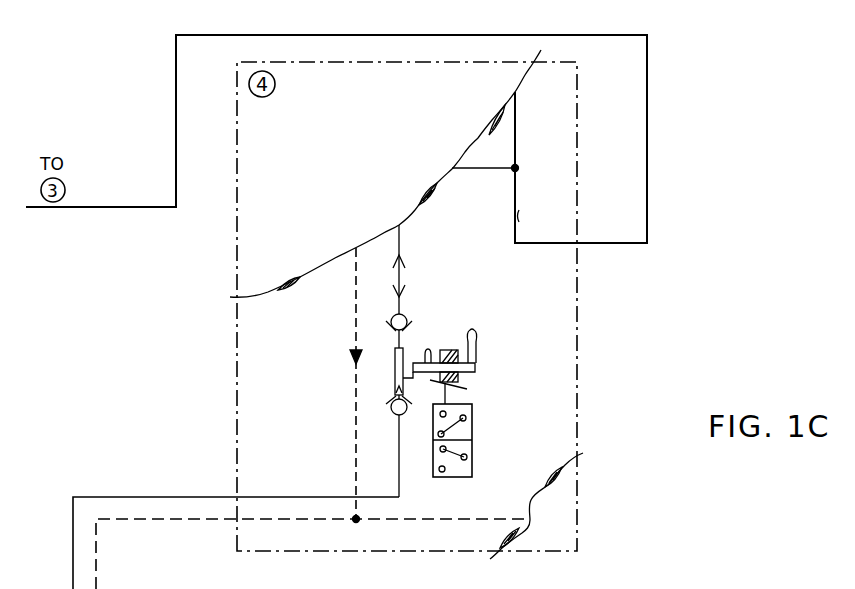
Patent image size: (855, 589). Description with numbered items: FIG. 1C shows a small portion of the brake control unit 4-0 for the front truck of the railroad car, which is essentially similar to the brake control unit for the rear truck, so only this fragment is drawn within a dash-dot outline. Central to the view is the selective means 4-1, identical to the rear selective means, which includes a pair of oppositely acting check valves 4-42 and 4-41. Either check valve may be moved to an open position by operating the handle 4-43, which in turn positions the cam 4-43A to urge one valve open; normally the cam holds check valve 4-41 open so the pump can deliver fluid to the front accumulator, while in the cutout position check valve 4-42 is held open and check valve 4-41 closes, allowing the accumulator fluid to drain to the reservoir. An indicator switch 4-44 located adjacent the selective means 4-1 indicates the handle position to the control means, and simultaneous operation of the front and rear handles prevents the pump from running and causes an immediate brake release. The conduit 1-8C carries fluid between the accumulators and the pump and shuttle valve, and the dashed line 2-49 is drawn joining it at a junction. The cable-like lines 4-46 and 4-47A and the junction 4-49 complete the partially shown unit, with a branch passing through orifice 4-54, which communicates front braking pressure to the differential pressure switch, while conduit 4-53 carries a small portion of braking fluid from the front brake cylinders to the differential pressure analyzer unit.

The brake control unit 4-0 is at (235, 124).
The flexible cable 4-46 is at (478, 166).
The junction connection 4-49 is at (546, 148).
The orifice 4-54 is at (511, 215).
The conduit 4-53 is at (592, 243).
The check valve 4-42 is at (388, 320).
The slide rod 4-43A is at (395, 375).
The check valve 4-41 is at (390, 410).
The selective means 4-1 is at (435, 344).
The handle 4-43 is at (478, 353).
The switch 4-44 is at (475, 433).
The conduit 1-8C is at (323, 495).
The flexible cable 4-47A is at (436, 521).
The dashed conductor 2-49 is at (221, 522).